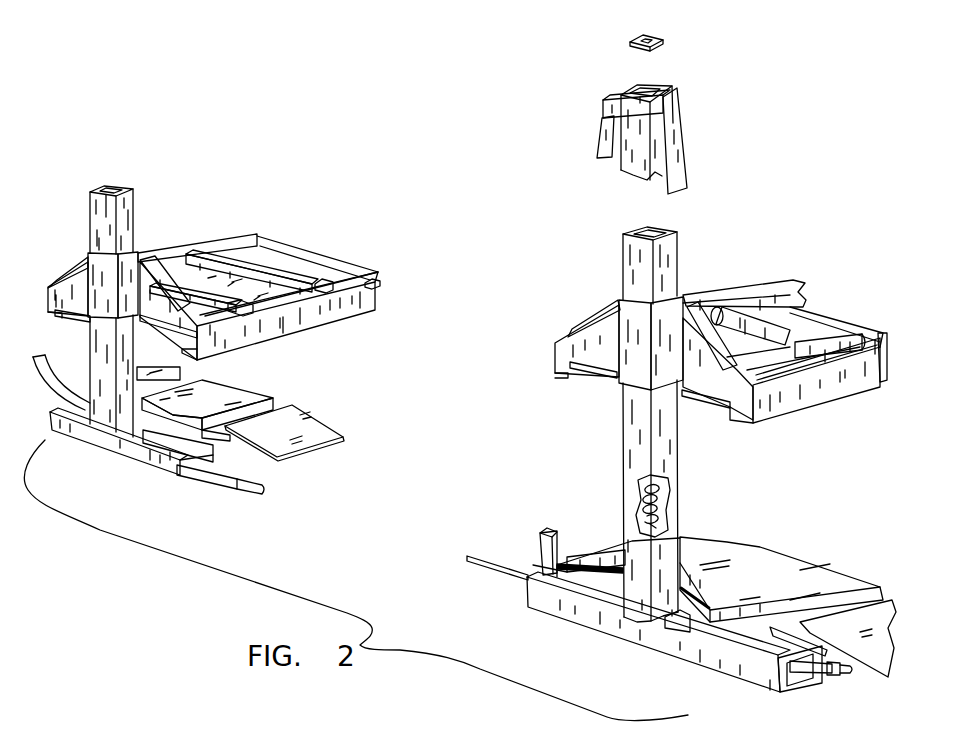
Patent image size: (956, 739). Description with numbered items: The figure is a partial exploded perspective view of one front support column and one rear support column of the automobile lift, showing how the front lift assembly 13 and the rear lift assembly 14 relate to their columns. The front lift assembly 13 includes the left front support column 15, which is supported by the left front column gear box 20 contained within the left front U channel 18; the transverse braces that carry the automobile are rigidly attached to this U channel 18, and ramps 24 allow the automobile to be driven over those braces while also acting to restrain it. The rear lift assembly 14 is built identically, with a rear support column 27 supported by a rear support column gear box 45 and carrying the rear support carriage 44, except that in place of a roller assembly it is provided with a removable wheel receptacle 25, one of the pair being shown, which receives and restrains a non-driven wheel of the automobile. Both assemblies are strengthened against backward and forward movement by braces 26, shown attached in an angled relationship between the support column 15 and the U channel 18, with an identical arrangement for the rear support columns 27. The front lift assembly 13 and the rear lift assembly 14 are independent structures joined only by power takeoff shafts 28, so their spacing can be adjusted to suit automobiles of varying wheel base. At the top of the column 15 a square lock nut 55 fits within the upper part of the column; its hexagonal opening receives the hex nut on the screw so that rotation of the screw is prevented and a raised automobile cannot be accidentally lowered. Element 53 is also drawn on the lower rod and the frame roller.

The front lift assembly 13 is at (881, 395).
The rear lift assembly 14 is at (316, 330).
The left front support column 15 is at (630, 418).
The left front U channel 18 is at (540, 613).
The left front column gear box 20 is at (637, 643).
The ramps 24 is at (310, 412).
The removable wheel receptacle 25 is at (265, 260).
The braces 26 is at (600, 135).
The rear support column 27 is at (134, 204).
The power takeoff shaft 28 is at (200, 472).
The rear support carriage 44 is at (348, 282).
The rear support column gear box 45 is at (100, 440).
The roller cylinder 53 is at (810, 345).
The lock nut 55 is at (663, 43).